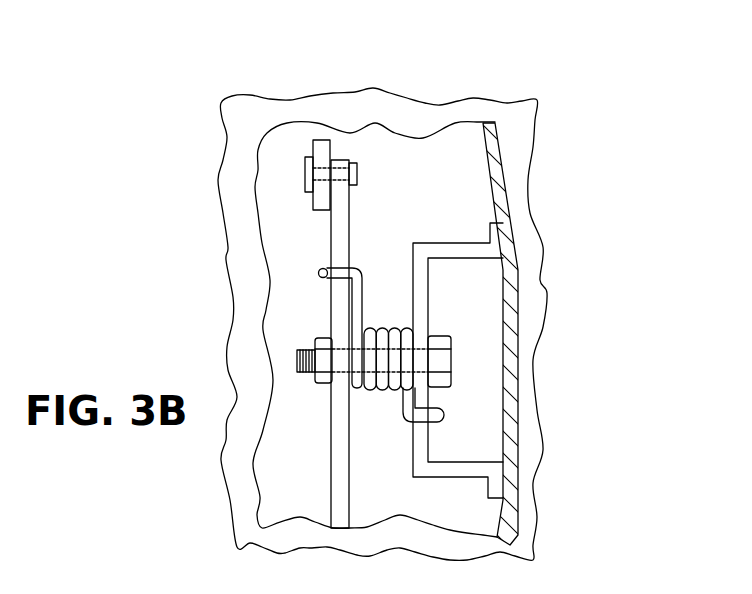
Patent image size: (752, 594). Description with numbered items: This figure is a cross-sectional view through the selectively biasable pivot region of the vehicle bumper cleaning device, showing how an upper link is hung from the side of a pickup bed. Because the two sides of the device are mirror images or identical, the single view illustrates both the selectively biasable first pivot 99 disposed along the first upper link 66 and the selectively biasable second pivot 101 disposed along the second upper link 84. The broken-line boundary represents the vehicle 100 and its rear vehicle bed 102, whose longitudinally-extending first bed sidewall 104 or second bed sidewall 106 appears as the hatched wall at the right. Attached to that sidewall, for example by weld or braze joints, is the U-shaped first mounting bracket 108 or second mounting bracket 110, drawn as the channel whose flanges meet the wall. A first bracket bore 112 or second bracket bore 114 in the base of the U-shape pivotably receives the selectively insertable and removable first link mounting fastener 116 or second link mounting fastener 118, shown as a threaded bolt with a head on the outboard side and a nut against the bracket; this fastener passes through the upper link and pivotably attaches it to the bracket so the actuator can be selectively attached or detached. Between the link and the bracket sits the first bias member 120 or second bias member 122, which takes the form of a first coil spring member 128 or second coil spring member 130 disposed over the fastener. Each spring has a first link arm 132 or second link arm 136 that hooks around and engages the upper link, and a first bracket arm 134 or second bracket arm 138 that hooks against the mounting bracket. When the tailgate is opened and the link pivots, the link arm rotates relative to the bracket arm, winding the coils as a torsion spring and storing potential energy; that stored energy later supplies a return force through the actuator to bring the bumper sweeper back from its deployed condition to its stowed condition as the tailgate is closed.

The first upper link 66 is at (366, 334).
The second upper link 84 is at (353, 227).
The selectively biasable first pivot 99 is at (558, 338).
The selectively biasable second pivot 101 is at (452, 358).
The vehicle 100 is at (508, 100).
The vehicle bed 102 is at (372, 122).
The first bed sidewall 104 is at (406, 335).
The second bed sidewall 106 is at (522, 273).
The first mounting bracket 108 is at (427, 367).
The second mounting bracket 110 is at (412, 442).
The first bracket bore 112 is at (268, 424).
The second bracket bore 114 is at (268, 424).
The first link mounting fastener 116 is at (558, 278).
The second link mounting fastener 118 is at (307, 373).
The first bias member 120 is at (458, 201).
The second bias member 122 is at (383, 323).
The first coil spring member 128 is at (489, 232).
The second coil spring member 130 is at (395, 327).
The first link arm 132 is at (233, 291).
The second link arm 136 is at (320, 268).
The first bracket arm 134 is at (524, 385).
The second bracket arm 138 is at (445, 405).